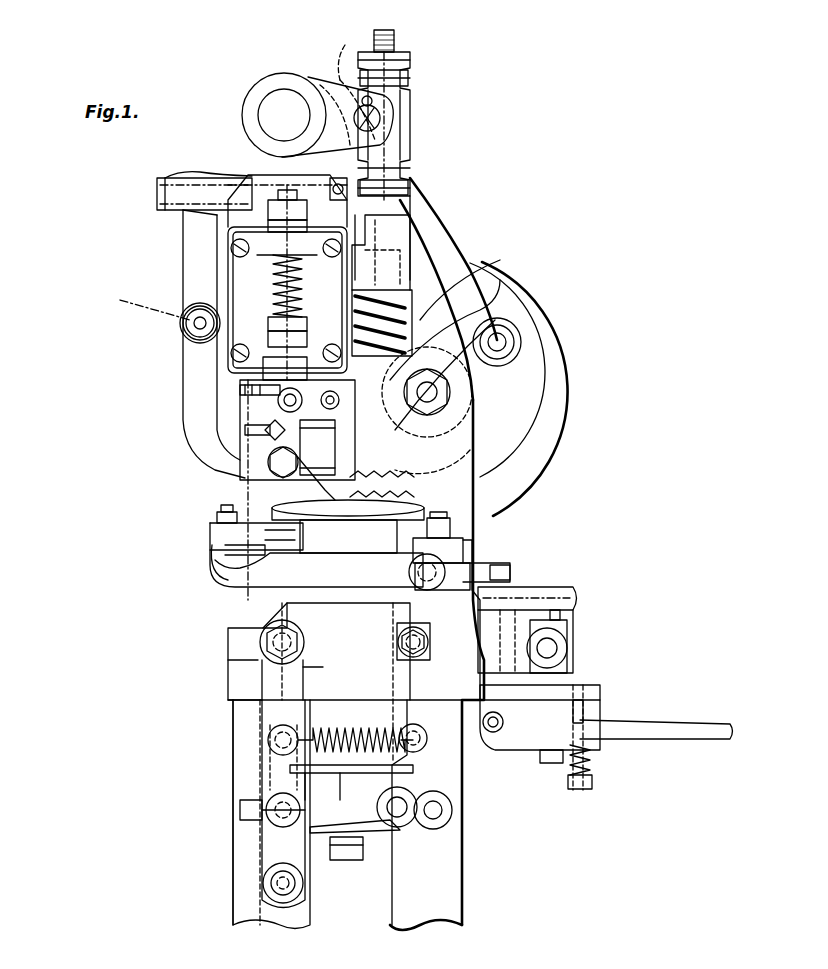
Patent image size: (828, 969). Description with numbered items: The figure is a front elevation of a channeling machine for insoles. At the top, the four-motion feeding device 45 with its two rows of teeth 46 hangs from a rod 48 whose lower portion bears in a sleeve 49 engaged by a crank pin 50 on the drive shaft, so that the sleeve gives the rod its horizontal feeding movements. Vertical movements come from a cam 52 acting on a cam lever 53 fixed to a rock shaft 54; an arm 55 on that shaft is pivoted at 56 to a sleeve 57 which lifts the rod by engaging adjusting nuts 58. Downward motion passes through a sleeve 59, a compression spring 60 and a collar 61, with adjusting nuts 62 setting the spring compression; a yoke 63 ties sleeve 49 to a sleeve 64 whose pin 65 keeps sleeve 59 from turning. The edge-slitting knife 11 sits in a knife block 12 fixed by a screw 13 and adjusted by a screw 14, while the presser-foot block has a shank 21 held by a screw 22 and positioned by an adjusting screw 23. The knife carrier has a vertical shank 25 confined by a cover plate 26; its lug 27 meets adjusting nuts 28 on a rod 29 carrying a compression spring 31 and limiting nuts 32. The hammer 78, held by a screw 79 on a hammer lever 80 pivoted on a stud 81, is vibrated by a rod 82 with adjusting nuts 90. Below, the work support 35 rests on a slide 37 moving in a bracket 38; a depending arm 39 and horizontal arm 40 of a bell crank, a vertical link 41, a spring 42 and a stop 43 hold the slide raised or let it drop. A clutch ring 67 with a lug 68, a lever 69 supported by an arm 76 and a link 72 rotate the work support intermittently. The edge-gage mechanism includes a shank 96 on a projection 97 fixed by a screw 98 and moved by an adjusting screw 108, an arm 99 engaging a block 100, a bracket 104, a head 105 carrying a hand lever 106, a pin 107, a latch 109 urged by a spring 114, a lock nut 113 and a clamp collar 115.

The edge-slitting knife 11 is at (300, 495).
The knife block 12 is at (300, 445).
The screw 13 is at (245, 430).
The adjusting screw 14 is at (265, 432).
The horizontal shank 21 is at (322, 405).
The screw 22 is at (240, 390).
The adjusting screw 23 is at (280, 400).
The vertical shank 25 is at (250, 260).
The cover plate 26 is at (190, 280).
The lug 27 is at (352, 320).
The adjusting nuts 28 is at (268, 330).
The rod 29 is at (335, 183).
The compression spring 31 is at (278, 300).
The adjusting nuts 32 is at (285, 232).
The work support 35 is at (478, 525).
The vertical slide 37 is at (313, 597).
The bracket 38 is at (310, 700).
The depending arm 39 is at (262, 860).
The horizontal arm 40 is at (362, 815).
The vertical link 41 is at (262, 770).
The spring 42 is at (348, 730).
The stop 43 is at (352, 772).
The feeding device 45 is at (400, 470).
The teeth 46 is at (398, 495).
The rod 48 is at (395, 32).
The sleeve 49 is at (460, 420).
The crank pin 50 is at (450, 392).
The cam 52 is at (538, 325).
The cam lever 53 is at (428, 222).
The rock shaft 54 is at (288, 105).
The arm 55 is at (340, 80).
The pivot 56 is at (380, 118).
The sleeve 57 is at (405, 135).
The adjusting nuts 58 is at (408, 84).
The sleeve 59 is at (445, 200).
The compression spring 60 is at (450, 320).
The collar 61 is at (470, 345).
The adjusting nuts 62 is at (408, 188).
The yoke 63 is at (520, 337).
The sleeve 64 is at (420, 238).
The pin 65 is at (460, 275).
The clutch ring 67 is at (285, 575).
The lug 68 is at (240, 552).
The lever 69 is at (240, 538).
The link 72 is at (215, 518).
The arm 76 is at (215, 575).
The hammer 78 is at (300, 480).
The screw 79 is at (268, 462).
The hammer lever 80 is at (190, 310).
The stud 81 is at (157, 194).
The rod 82 is at (186, 325).
The adjusting nuts 90 is at (137, 302).
The horizontal shank 96 is at (455, 550).
The horizontal projection 97 is at (428, 645).
The screw 98 is at (395, 525).
The arm 99 is at (495, 565).
The block 100 is at (510, 572).
The bracket 104 is at (567, 628).
The head 105 is at (505, 745).
The hand lever 106 is at (650, 733).
The pin 107 is at (560, 616).
The adjusting screw 108 is at (393, 593).
The latch 109 is at (585, 705).
The lock nut 113 is at (567, 650).
The spring 114 is at (590, 765).
The clamp collar 115 is at (540, 595).